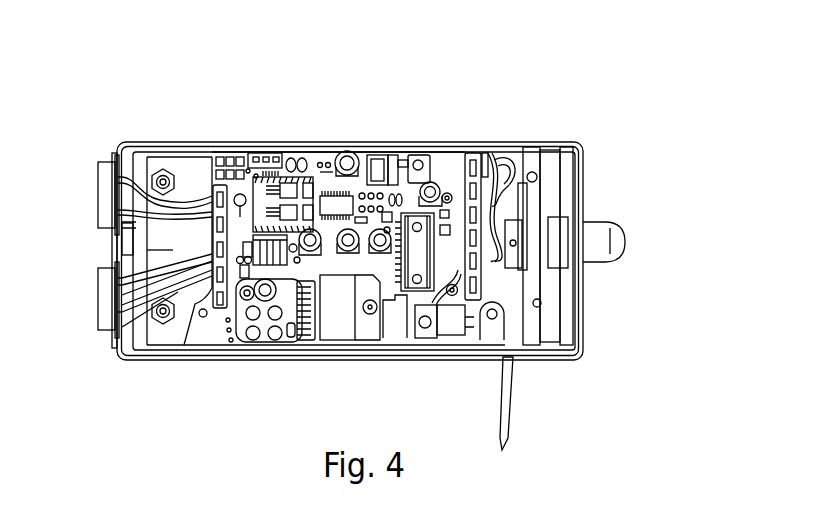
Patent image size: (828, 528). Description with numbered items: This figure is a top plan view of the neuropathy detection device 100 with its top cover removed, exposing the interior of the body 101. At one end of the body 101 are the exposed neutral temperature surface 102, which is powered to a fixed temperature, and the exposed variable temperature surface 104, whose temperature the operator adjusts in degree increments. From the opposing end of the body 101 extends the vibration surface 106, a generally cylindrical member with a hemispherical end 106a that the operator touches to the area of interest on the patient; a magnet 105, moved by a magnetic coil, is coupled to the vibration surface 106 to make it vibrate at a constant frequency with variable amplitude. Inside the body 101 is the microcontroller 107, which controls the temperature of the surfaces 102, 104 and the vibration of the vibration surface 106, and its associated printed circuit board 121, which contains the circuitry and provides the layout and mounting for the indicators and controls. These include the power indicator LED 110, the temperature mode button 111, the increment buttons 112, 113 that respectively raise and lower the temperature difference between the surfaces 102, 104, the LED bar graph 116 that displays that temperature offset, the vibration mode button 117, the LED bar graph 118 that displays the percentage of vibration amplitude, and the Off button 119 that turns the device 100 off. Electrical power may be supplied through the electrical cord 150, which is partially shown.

The neuropathy detection device 100 is at (526, 93).
The body 101 is at (161, 136).
The neutral temperature surface 102 is at (98, 298).
The variable temperature surface 104 is at (98, 187).
The magnet 105 is at (513, 226).
The vibration surface 106 is at (615, 258).
The end 106a is at (627, 237).
The microcontroller 107 is at (343, 332).
The power indicator LED 110 is at (349, 229).
The temperature mode button 111 is at (240, 316).
The increment button 112 is at (319, 252).
The increment button 113 is at (377, 230).
The LED bar graph 116 is at (193, 300).
The vibration mode button 117 is at (435, 184).
The LED bar graph 118 is at (486, 296).
The Off button 119 is at (343, 152).
The printed circuit board 121 is at (406, 160).
The electrical cord 150 is at (509, 403).